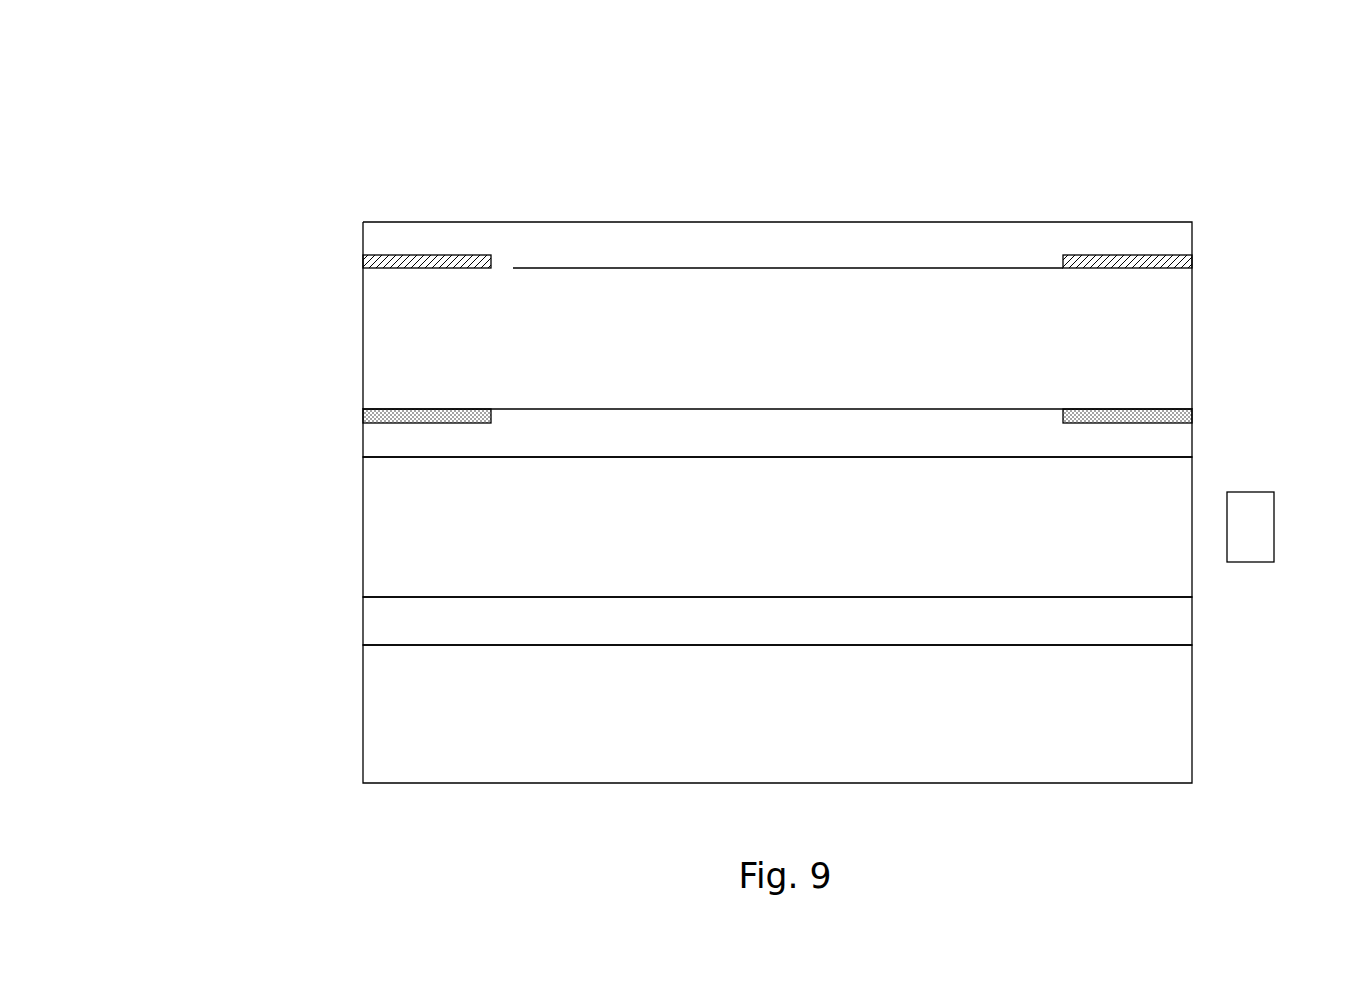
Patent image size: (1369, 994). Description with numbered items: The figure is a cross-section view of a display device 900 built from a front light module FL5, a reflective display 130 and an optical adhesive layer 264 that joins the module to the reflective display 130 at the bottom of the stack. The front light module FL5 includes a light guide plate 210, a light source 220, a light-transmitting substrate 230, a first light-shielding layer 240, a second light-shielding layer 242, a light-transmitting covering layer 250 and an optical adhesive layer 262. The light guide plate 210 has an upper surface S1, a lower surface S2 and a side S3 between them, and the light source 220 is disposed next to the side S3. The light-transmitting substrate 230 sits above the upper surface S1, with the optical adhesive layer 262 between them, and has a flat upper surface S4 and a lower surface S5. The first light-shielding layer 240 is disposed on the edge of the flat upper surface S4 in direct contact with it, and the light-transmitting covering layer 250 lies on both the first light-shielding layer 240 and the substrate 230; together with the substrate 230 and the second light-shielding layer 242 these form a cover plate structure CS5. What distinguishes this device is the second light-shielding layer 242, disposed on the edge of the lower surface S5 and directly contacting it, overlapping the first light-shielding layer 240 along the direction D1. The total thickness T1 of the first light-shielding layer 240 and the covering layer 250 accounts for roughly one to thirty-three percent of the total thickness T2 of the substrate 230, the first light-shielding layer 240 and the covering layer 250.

The display device 900 is at (295, 75).
The reflective display 130 is at (368, 713).
The optical adhesive layer 264 is at (368, 619).
The light guide plate 210 is at (368, 519).
The optical adhesive layer 262 is at (368, 433).
The second light-shielding layer 242 is at (368, 406).
The light-transmitting substrate 230 is at (368, 334).
The first light-shielding layer 240 is at (368, 261).
The light-transmitting covering layer 250 is at (368, 238).
The light source 220 is at (1265, 525).
The upper surface S1 is at (470, 457).
The lower surface S2 is at (430, 597).
The side S3 is at (1192, 467).
The flat upper surface S4 is at (513, 268).
The lower surface S5 is at (517, 409).
The first direction D1 is at (440, 288).
The total thickness T1 is at (1192, 222).
The total thickness T2 is at (1192, 408).
The front light module FL5 is at (187, 585).
The cover plate structure CS5 is at (193, 785).